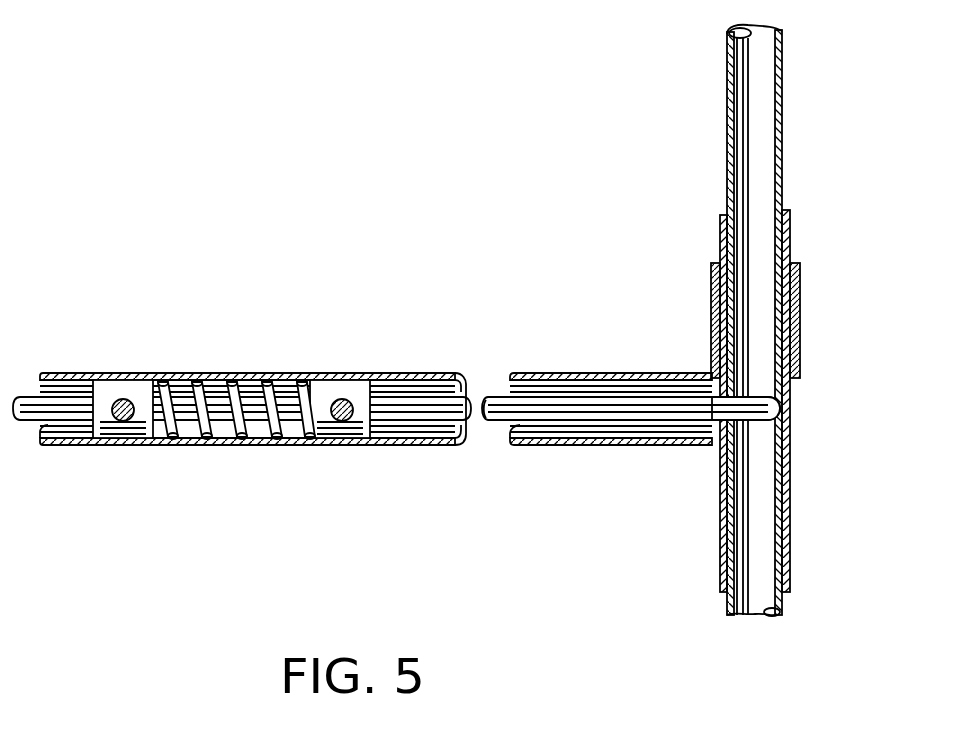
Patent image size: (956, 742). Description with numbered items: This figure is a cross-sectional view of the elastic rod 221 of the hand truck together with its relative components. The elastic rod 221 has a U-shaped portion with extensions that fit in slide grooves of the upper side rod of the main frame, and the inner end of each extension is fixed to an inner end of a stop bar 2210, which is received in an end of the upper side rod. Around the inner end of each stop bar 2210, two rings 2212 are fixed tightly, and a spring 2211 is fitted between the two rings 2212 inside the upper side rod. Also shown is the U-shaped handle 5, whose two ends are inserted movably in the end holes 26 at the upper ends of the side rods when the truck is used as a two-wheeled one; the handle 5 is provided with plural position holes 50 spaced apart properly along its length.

The handle 5 is at (769, 132).
The position holes 50 is at (729, 188).
The end holes 26 is at (787, 214).
The elastic rod 221 is at (340, 440).
The spring 2211 is at (223, 437).
The rings 2212 is at (103, 437).
The stop bar 2210 is at (593, 403).